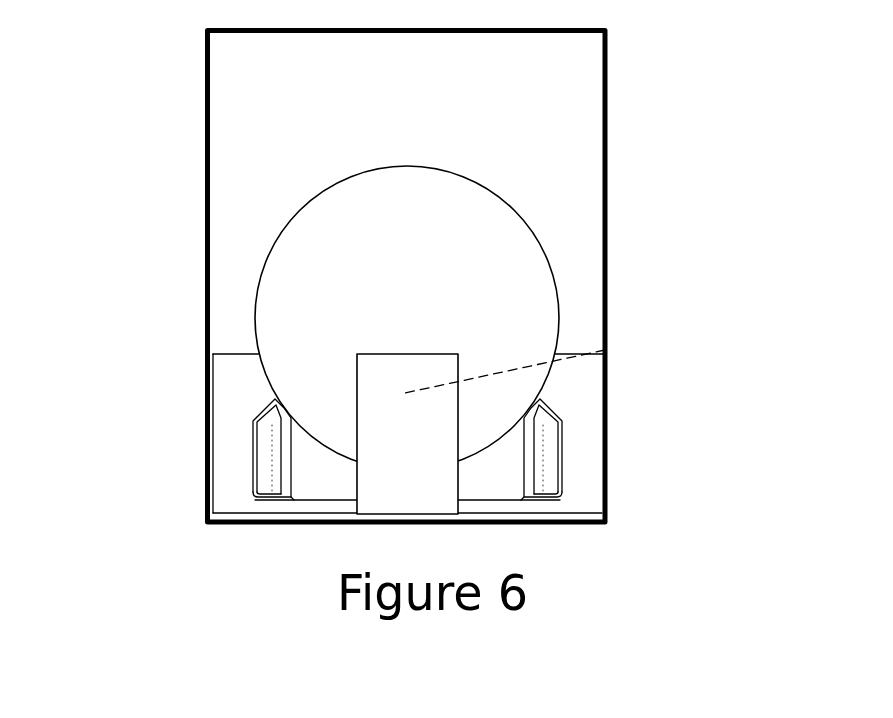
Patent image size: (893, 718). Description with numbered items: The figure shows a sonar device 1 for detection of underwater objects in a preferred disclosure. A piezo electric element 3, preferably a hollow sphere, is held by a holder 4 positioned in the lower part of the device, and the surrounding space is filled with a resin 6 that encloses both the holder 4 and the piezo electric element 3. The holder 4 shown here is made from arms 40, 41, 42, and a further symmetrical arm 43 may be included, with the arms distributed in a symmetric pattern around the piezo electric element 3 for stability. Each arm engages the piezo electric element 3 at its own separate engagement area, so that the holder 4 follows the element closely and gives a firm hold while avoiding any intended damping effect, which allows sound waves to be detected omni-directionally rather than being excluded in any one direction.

The sonar device 1 is at (412, 285).
The piezo electric element 3 is at (320, 278).
The holder 4 is at (398, 454).
The resin 6 is at (288, 80).
The arm 40 is at (235, 423).
The arm 41 is at (407, 452).
The arm 42 is at (577, 392).
The arm 43 is at (605, 350).